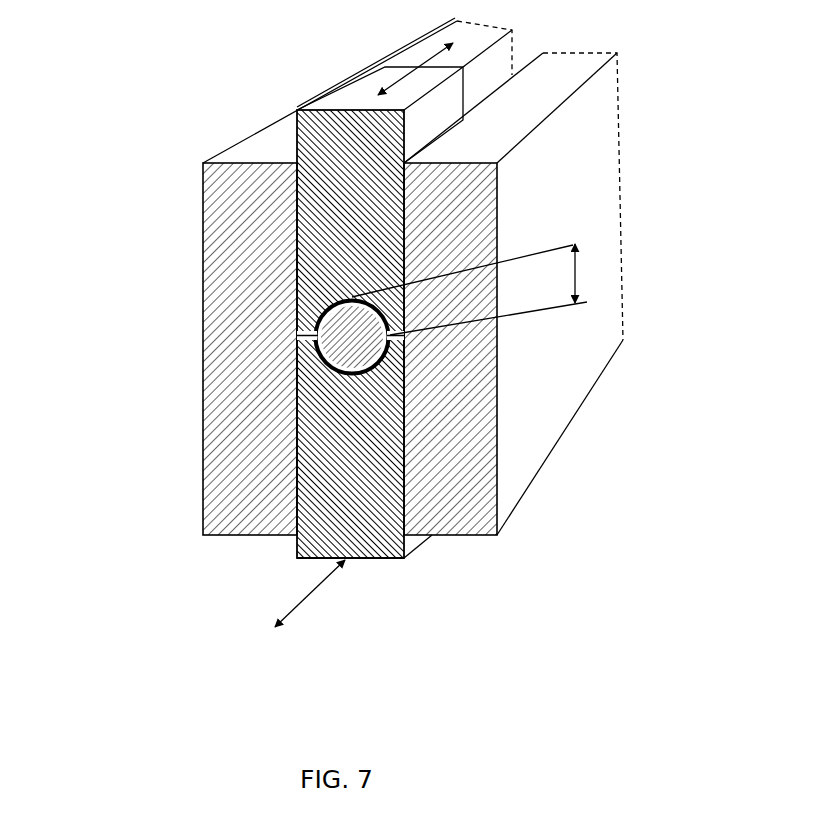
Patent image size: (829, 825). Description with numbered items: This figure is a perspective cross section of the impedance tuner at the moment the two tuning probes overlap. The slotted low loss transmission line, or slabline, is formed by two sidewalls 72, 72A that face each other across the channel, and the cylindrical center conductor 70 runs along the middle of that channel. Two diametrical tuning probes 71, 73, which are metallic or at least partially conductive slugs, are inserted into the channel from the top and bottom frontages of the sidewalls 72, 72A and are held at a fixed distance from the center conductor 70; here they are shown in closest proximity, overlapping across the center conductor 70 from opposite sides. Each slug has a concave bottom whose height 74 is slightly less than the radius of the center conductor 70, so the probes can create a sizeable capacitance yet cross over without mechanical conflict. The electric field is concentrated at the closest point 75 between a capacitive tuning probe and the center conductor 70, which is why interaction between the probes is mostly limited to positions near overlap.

The center conductor 70 is at (300, 349).
The tuning probe 71 is at (297, 237).
The slabline sidewall 72 is at (225, 152).
The slabline sidewall 72A is at (497, 180).
The tuning probe 73 is at (297, 455).
The height of the concave cavity 74 is at (577, 273).
The closest point 75 is at (392, 353).